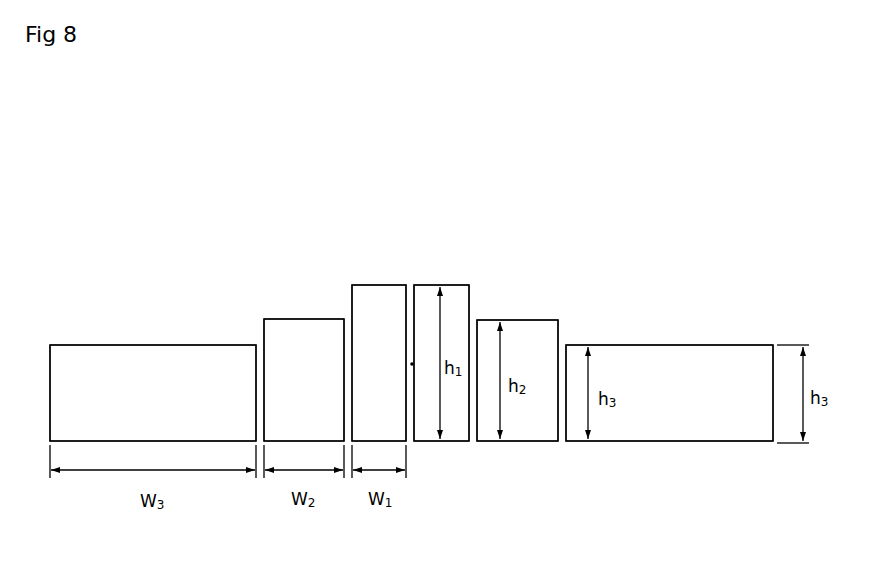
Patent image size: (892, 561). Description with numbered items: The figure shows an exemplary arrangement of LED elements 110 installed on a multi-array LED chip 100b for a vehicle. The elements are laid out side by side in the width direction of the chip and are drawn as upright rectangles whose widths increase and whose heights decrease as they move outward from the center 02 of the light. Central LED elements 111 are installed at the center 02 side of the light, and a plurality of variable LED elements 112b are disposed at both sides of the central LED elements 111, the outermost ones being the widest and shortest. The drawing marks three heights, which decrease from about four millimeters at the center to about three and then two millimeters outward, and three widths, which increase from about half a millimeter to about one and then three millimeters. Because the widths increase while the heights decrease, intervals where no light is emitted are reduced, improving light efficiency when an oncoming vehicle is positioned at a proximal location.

The multi-array LED chip for a vehicle 100b is at (180, 160).
The LED elements 110 is at (567, 188).
The central LED elements 111 is at (452, 295).
The variable LED elements 112b is at (212, 357).
The center of the light 02 is at (412, 364).